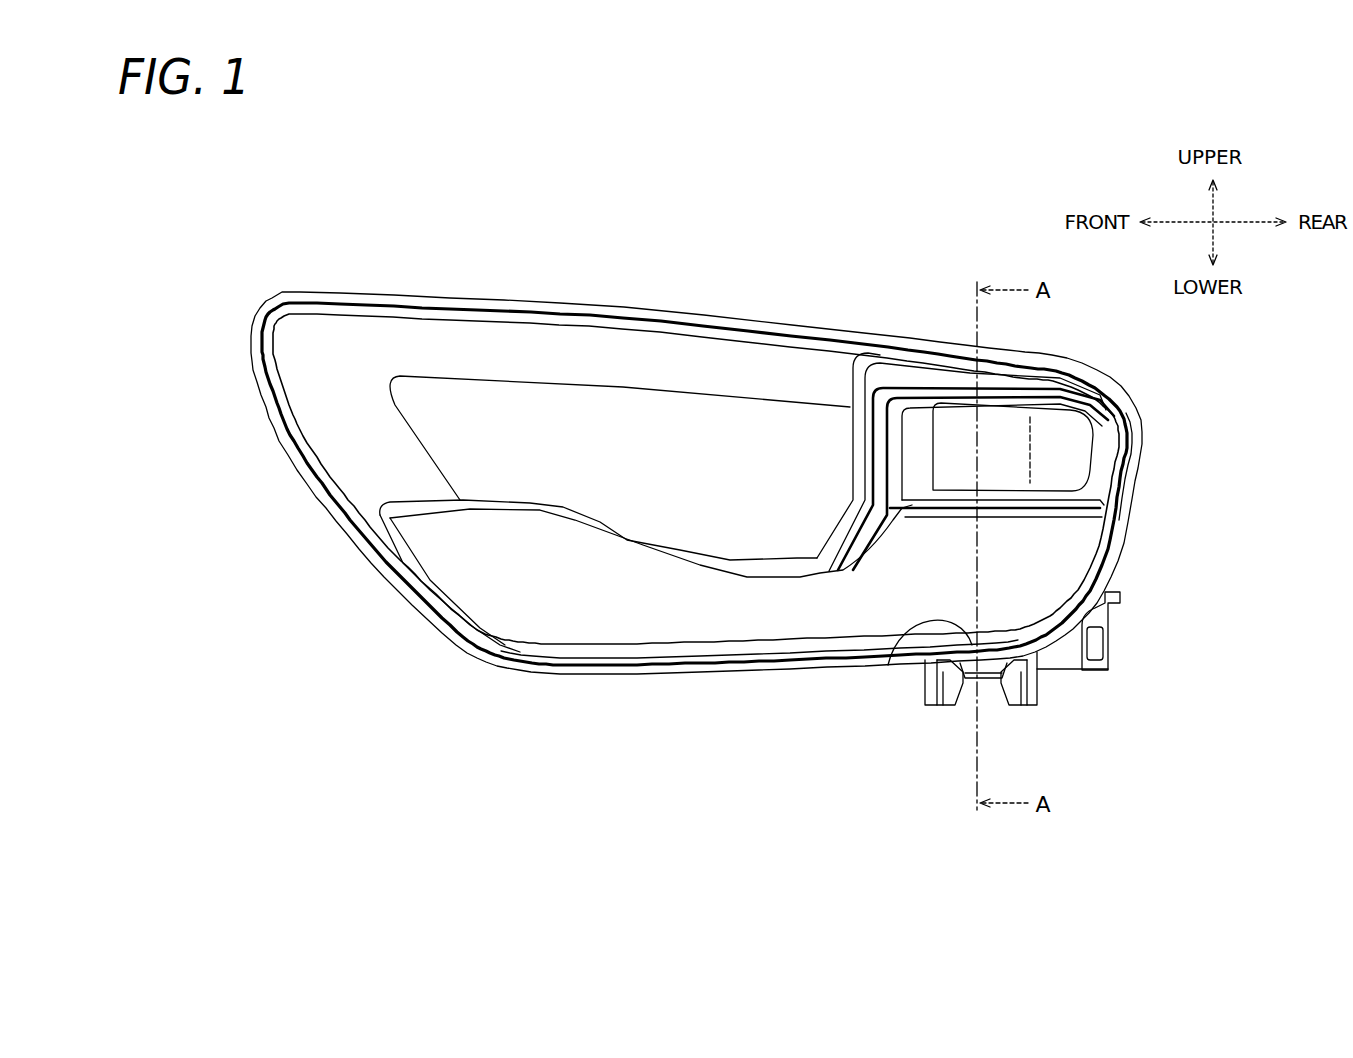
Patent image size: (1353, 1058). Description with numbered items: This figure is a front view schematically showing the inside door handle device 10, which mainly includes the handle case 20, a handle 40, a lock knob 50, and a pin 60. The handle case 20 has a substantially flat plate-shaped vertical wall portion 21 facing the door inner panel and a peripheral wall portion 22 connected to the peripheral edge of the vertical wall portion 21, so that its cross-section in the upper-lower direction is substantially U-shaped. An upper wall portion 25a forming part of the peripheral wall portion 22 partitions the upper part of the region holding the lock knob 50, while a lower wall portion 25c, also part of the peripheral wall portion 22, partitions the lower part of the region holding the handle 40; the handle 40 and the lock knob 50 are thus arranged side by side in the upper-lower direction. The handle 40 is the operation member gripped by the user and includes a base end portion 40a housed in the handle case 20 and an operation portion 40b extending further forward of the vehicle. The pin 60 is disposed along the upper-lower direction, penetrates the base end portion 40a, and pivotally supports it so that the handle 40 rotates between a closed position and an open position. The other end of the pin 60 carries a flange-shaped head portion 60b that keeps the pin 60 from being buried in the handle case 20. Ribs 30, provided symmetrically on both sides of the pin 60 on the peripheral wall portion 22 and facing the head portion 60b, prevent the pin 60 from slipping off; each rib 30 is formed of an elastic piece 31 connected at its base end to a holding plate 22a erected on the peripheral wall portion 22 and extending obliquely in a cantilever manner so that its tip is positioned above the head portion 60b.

The inside door handle device 10 is at (588, 280).
The handle case 20 is at (658, 306).
The vertical wall portion 21 is at (455, 448).
The peripheral wall portion 22 is at (503, 347).
The holding plate 22a is at (925, 685).
The upper wall portion 25a is at (1017, 387).
The lower wall portion 25c is at (890, 660).
The rib 30 is at (1007, 723).
The elastic piece 31 is at (953, 697).
The handle 40 is at (615, 507).
The base end portion 40a is at (1037, 558).
The operation portion 40b is at (540, 590).
The lock knob 50 is at (1077, 452).
The pin 60 is at (995, 719).
The head portion 60b is at (990, 682).